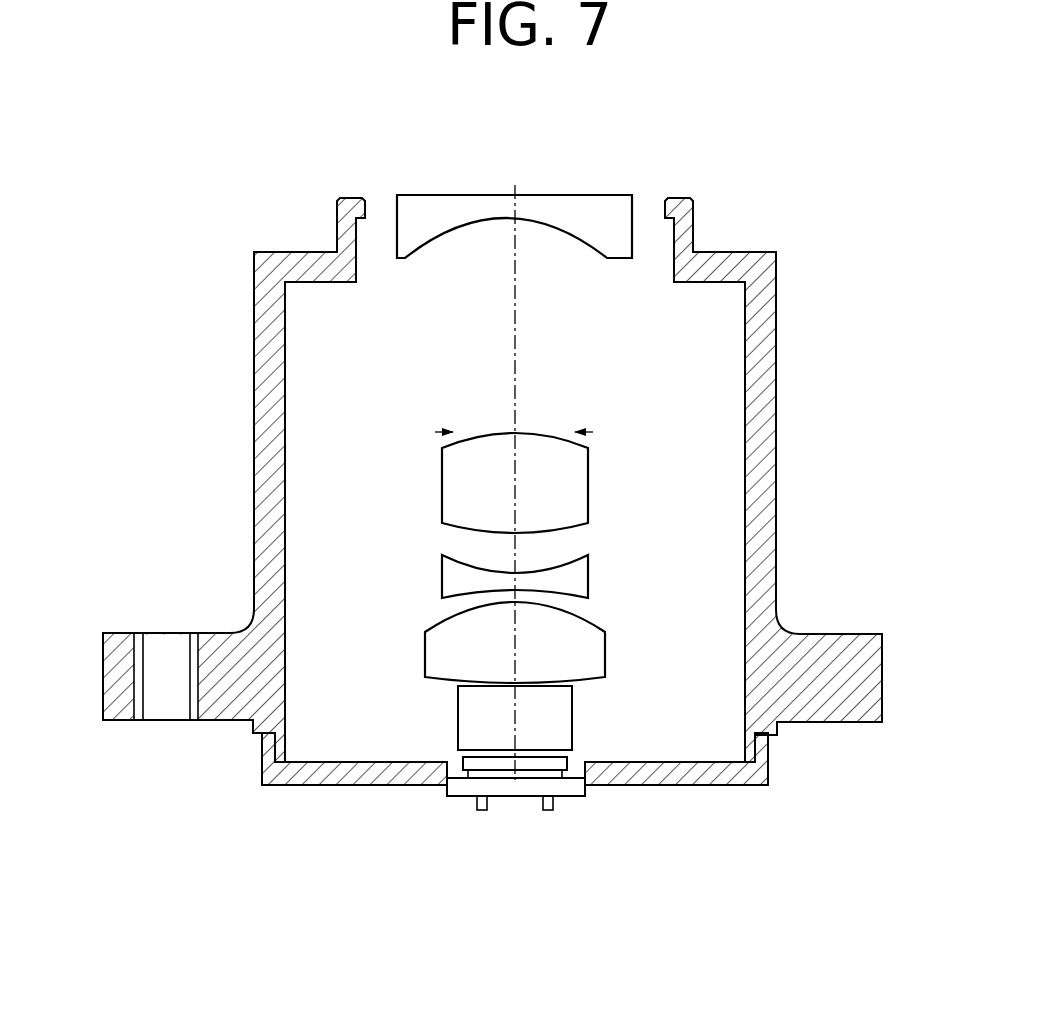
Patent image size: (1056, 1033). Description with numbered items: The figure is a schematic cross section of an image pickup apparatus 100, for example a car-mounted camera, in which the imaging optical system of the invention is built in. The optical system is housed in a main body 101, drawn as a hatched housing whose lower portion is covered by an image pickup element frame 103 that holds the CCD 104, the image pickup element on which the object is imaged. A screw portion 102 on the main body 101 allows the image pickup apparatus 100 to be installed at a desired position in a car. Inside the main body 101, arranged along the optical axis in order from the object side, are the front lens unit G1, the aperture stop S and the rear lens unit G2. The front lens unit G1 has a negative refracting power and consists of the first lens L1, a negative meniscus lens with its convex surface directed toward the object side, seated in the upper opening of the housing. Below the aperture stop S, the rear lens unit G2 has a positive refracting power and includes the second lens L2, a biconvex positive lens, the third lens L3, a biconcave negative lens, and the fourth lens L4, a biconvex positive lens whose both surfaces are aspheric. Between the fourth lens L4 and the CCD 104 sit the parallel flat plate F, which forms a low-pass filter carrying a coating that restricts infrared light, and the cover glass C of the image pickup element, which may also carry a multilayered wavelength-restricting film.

The image pickup apparatus 100 is at (561, 480).
The main body 101 is at (882, 677).
The screw portion 102 is at (160, 632).
The image pickup element frame 103 is at (262, 770).
The CCD 104 is at (570, 800).
The front lens unit G1 is at (458, 274).
The rear lens unit G2 is at (503, 558).
The first lens L1 is at (615, 259).
The second lens L2 is at (590, 483).
The third lens L3 is at (590, 571).
The fourth lens L4 is at (607, 655).
The aperture stop S is at (427, 427).
The parallel flat plate F is at (455, 710).
The cover glass C is at (458, 757).